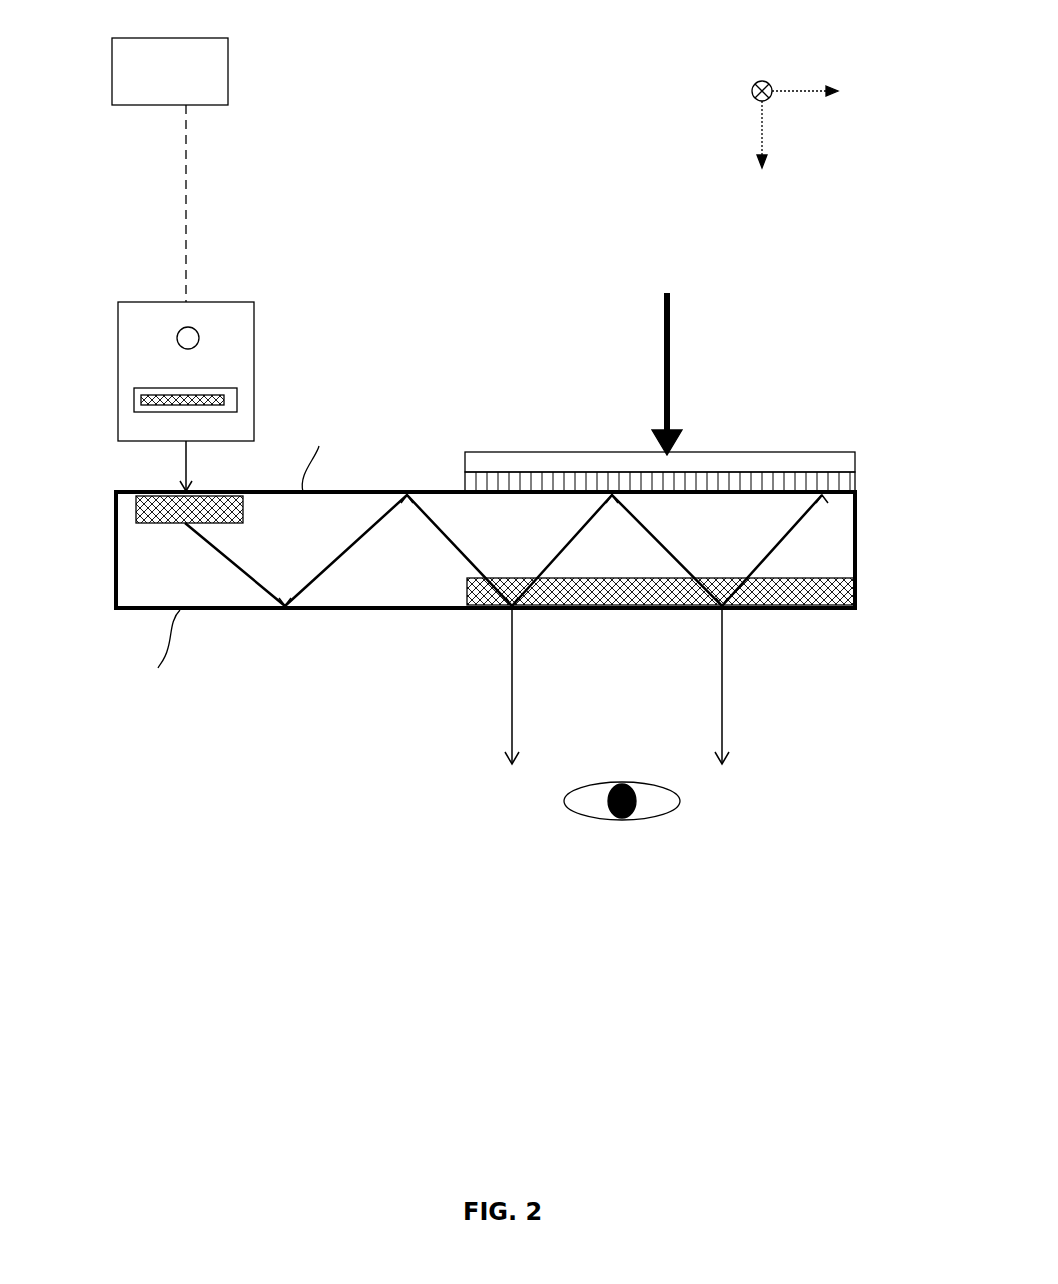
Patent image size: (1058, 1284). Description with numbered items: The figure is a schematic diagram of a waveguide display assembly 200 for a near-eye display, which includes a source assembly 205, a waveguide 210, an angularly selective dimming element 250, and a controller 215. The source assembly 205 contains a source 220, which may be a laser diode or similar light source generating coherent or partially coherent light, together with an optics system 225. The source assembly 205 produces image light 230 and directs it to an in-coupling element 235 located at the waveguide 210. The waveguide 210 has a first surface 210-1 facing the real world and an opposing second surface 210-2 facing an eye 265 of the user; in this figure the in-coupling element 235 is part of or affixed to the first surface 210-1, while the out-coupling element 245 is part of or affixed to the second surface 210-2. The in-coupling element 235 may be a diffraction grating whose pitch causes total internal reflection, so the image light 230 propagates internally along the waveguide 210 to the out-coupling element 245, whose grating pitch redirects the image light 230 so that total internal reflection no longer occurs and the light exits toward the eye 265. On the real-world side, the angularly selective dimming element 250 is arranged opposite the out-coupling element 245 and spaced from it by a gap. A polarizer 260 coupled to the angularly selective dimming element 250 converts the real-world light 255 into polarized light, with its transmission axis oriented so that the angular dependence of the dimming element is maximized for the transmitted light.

The waveguide display assembly 200 is at (73, 31).
The source assembly 205 is at (118, 315).
The waveguide 210 is at (114, 587).
The first surface 210-1 is at (353, 467).
The second surface 210-2 is at (165, 657).
The controller 215 is at (170, 170).
The source 220 is at (198, 333).
The optics system 225 is at (239, 398).
The image light 230 is at (188, 457).
The in-coupling element 235 is at (123, 508).
The out-coupling element 245 is at (820, 597).
The angularly selective dimming element 250 is at (818, 485).
The real-world light 255 is at (672, 385).
The polarizer 260 is at (141, 398).
The eye 265 is at (622, 823).